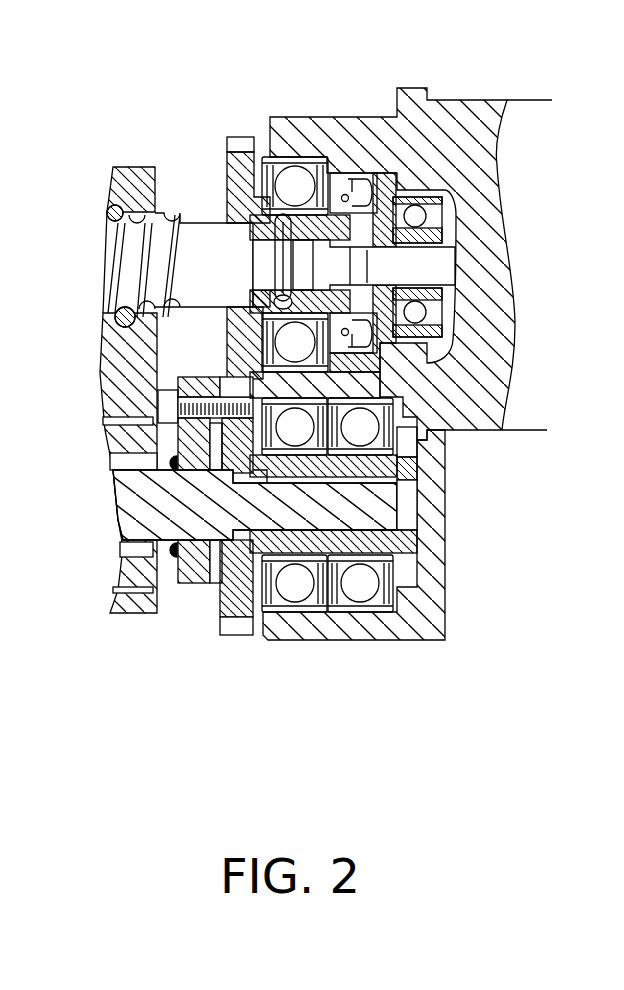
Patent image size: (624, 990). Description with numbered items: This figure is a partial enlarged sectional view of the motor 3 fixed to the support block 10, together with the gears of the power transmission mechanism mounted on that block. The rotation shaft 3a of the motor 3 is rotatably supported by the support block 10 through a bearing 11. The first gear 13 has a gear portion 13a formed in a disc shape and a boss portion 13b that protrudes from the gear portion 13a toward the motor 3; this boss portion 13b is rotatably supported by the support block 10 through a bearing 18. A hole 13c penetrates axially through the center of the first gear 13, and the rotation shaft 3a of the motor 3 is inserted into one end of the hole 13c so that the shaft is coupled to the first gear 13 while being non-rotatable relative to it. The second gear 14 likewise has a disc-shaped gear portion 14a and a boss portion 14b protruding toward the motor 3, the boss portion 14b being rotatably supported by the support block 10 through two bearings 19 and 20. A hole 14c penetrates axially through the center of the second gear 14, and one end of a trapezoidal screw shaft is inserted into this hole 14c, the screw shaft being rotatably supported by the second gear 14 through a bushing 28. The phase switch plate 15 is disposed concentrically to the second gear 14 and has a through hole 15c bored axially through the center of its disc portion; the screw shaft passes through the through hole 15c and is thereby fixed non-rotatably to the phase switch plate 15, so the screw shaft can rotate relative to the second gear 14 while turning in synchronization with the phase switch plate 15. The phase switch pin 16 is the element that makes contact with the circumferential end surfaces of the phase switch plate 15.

The motor 3 is at (484, 100).
The rotation shaft 3a is at (378, 247).
The support block 10 is at (432, 603).
The bearing 11 is at (415, 216).
The first gear 13 is at (240, 136).
The gear portion 13a is at (235, 182).
The boss portion 13b is at (335, 175).
The hole 13c is at (252, 253).
The second gear 14 is at (237, 640).
The gear portion 14a is at (222, 598).
The boss portion 14b is at (385, 547).
The hole 14c is at (400, 498).
The phase switch plate 15 is at (190, 575).
The through hole 15c is at (187, 522).
The phase switch pin 16 is at (170, 393).
The bearing 18 is at (293, 178).
The bearing 19 is at (298, 590).
The bearing 20 is at (363, 592).
The bushing 28 is at (415, 465).